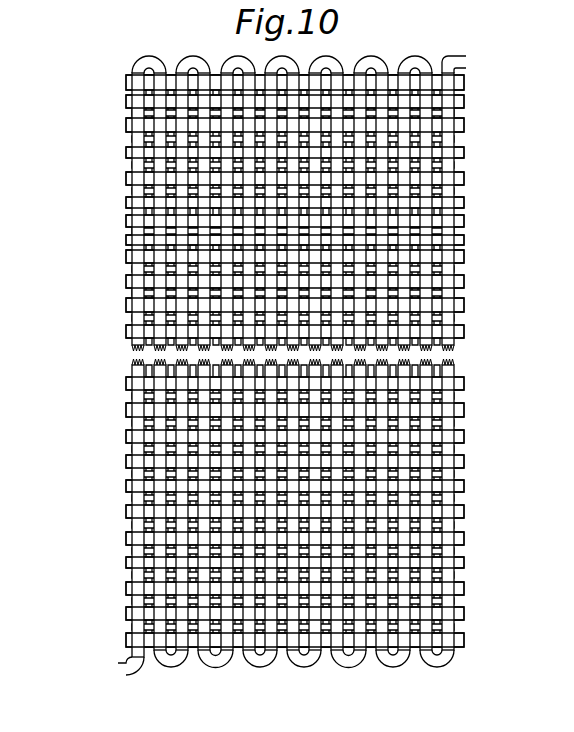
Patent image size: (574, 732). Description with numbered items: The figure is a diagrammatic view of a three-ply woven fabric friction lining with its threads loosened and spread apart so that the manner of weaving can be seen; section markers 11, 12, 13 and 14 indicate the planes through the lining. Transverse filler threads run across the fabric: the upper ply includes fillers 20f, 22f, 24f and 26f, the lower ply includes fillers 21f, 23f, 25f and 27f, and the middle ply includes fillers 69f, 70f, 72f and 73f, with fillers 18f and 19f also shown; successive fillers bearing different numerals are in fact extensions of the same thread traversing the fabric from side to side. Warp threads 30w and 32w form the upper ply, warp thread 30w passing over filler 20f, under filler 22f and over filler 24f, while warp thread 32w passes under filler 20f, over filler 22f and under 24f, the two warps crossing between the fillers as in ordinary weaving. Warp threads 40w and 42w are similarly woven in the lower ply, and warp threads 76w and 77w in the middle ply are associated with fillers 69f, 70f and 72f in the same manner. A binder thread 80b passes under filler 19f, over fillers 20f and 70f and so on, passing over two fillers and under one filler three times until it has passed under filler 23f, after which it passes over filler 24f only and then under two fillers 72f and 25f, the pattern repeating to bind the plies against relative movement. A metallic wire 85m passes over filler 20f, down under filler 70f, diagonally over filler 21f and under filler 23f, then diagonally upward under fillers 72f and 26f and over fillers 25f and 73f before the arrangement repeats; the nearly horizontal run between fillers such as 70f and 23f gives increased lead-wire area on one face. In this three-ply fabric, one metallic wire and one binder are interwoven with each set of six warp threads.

The section line 11 is at (70, 240).
The section line 12 is at (66, 88).
The section line 13 is at (63, 192).
The section line 14 is at (117, 265).
The binder thread 80b is at (126, 82).
The warp thread 30w is at (126, 101).
The warp thread 77w is at (126, 125).
The warp thread 42w is at (126, 178).
The warp thread 32w is at (126, 202).
The warp thread 76w is at (126, 221).
The warp thread 40w is at (126, 256).
The metallic wire 85m is at (126, 281).
The filler thread 18f is at (136, 670).
The filler thread 69f is at (160, 668).
The filler thread 19f is at (182, 668).
The filler thread 20f is at (204, 668).
The filler thread 70f is at (228, 668).
The filler thread 21f is at (250, 668).
The filler thread 22f is at (272, 668).
The filler thread 23f is at (294, 668).
The filler thread 24f is at (316, 668).
The filler thread 72f is at (338, 668).
The filler thread 25f is at (361, 668).
The filler thread 26f is at (383, 668).
The filler thread 27f is at (456, 652).
The filler thread 73f is at (438, 668).